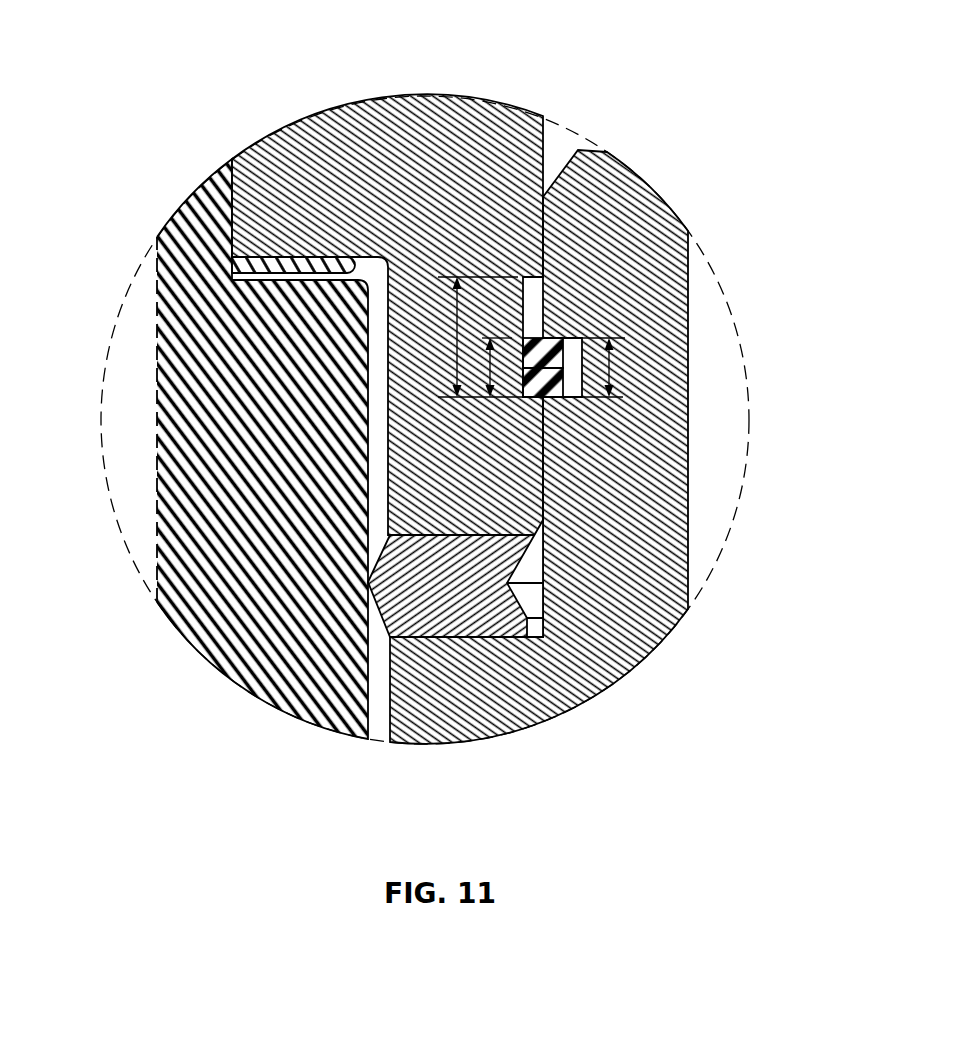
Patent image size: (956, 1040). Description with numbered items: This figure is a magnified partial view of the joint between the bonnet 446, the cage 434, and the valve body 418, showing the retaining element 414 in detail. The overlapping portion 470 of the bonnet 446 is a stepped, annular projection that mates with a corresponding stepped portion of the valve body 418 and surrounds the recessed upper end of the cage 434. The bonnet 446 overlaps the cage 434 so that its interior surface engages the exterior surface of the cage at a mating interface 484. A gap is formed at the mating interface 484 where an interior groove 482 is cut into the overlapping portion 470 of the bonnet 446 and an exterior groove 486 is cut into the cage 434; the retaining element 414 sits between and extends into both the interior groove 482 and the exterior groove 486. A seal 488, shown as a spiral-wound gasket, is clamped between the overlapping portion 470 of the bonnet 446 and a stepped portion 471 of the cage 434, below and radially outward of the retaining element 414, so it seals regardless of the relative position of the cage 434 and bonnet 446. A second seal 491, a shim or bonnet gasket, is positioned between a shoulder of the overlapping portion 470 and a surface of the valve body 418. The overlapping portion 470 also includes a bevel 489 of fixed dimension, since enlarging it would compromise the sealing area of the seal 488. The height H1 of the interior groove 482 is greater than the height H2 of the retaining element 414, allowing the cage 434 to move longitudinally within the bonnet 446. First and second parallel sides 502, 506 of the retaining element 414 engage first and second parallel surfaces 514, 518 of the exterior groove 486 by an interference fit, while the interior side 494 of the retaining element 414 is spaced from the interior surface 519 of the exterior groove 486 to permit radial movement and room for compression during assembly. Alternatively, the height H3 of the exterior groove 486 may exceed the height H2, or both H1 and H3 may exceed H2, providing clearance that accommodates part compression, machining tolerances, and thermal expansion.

The retaining element 414 is at (560, 400).
The valve body 418 is at (172, 512).
The cage 434 is at (657, 620).
The bonnet 446 is at (327, 122).
The overlapping portion 470 is at (443, 392).
The stepped portion 471 is at (405, 655).
The interior groove 482 is at (527, 303).
The mating interface 484 is at (543, 232).
The exterior groove 486 is at (590, 403).
The seal 488 is at (368, 585).
The bevel 489 is at (545, 400).
The seal 491 is at (272, 267).
The interior side 494 is at (568, 397).
The first parallel side 502 is at (535, 303).
The second parallel side 506 is at (533, 400).
The first parallel surface 514 is at (580, 352).
The second parallel surface 518 is at (578, 397).
The interior surface 519 is at (580, 356).
The height of interior groove H1 is at (450, 365).
The height of retaining element H2 is at (487, 397).
The height of exterior groove H3 is at (613, 368).